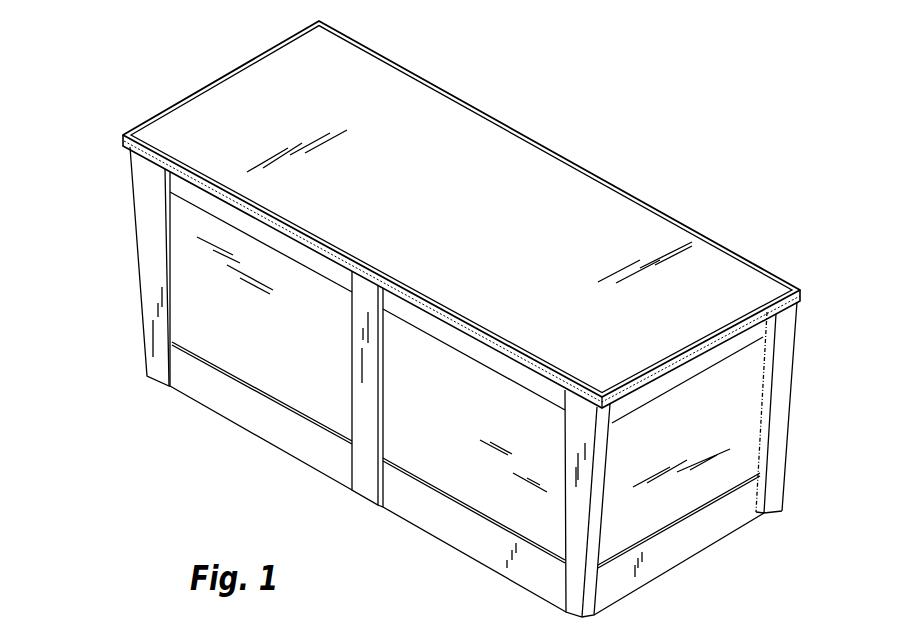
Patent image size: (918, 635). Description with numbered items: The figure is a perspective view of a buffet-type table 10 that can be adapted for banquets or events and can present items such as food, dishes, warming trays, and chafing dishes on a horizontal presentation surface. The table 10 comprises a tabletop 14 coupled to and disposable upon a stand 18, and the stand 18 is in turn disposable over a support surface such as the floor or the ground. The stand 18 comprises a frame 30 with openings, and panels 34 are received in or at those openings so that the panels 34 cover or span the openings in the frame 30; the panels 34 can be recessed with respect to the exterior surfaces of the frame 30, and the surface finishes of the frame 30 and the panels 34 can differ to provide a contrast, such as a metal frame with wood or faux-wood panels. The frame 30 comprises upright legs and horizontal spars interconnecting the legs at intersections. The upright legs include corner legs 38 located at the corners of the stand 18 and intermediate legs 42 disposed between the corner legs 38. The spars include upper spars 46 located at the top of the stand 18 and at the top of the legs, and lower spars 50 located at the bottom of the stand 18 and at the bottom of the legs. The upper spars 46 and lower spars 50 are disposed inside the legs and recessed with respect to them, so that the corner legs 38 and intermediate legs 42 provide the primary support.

The buffet-type table 10 is at (648, 167).
The tabletop 14 is at (488, 135).
The stand 18 is at (160, 272).
The frame 30 is at (157, 218).
The panel 34 is at (210, 330).
The corner leg 38 is at (783, 380).
The intermediate leg 42 is at (362, 450).
The upper spar 46 is at (733, 349).
The lower spar 50 is at (690, 548).